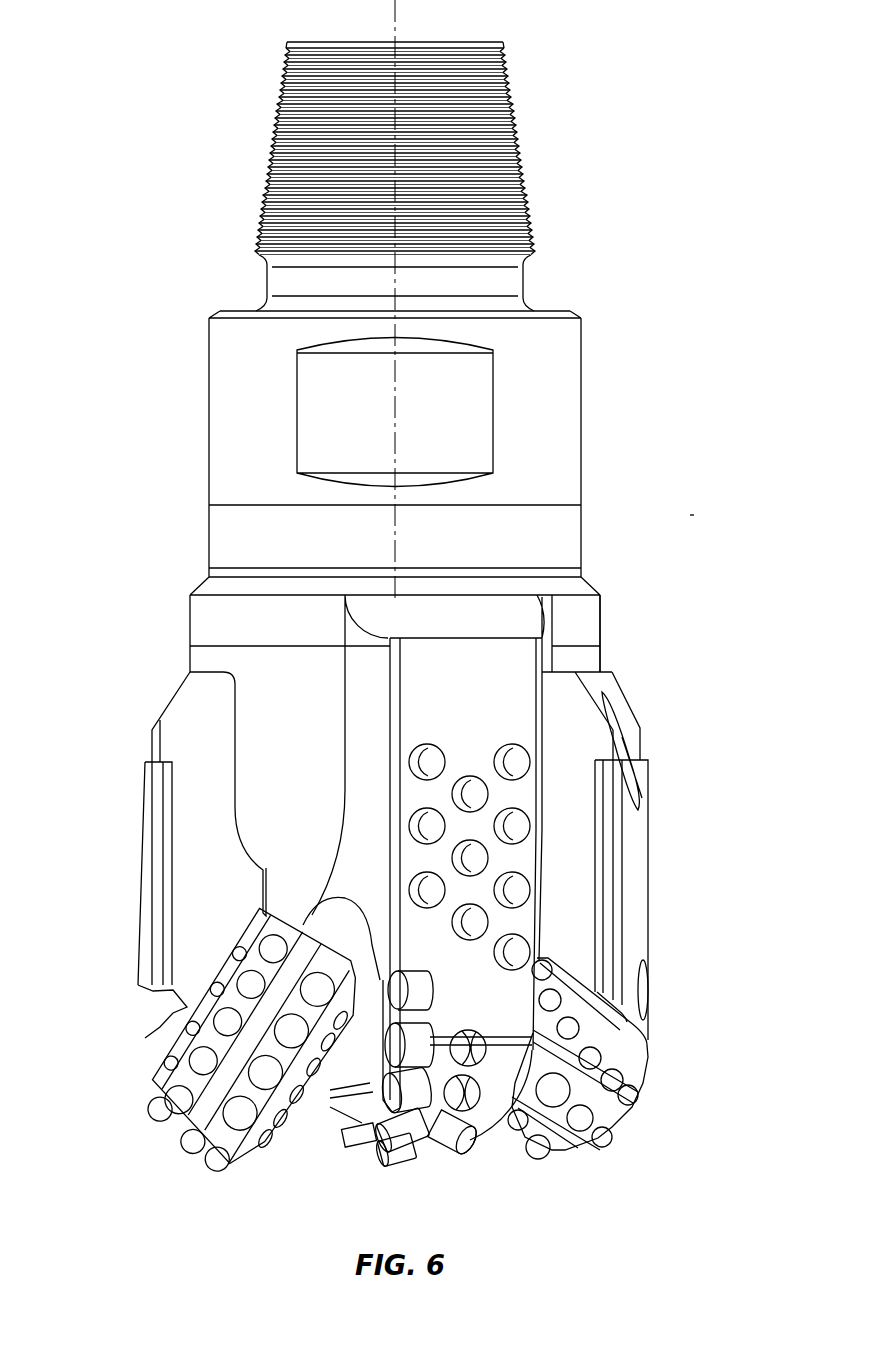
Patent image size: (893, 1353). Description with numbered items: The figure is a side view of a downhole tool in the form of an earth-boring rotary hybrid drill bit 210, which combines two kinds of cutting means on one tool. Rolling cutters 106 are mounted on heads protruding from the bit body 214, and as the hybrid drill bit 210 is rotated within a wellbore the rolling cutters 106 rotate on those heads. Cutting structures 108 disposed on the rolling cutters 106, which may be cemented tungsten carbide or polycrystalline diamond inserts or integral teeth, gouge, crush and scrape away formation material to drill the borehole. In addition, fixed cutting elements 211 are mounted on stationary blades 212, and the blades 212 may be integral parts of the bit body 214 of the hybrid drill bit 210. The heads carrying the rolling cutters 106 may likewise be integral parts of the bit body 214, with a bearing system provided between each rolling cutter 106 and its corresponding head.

The hybrid drill bit 210 is at (126, 181).
The bit body 214 is at (283, 671).
The rolling cutters 106 is at (178, 1143).
The cutting structures 108 is at (160, 1117).
The fixed cutting elements 211 is at (403, 1092).
The blades 212 is at (505, 1065).